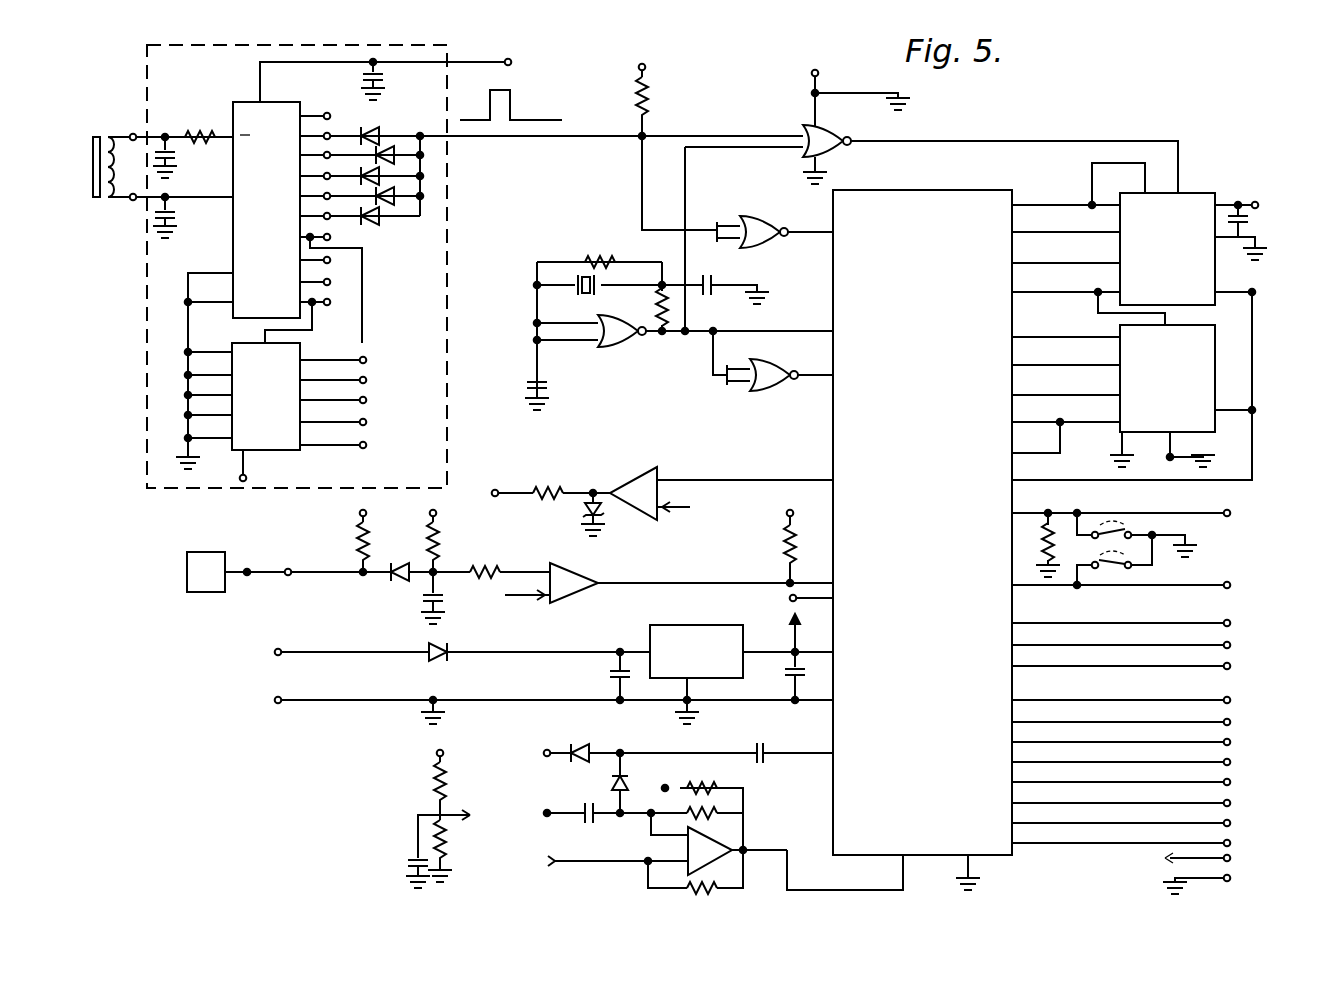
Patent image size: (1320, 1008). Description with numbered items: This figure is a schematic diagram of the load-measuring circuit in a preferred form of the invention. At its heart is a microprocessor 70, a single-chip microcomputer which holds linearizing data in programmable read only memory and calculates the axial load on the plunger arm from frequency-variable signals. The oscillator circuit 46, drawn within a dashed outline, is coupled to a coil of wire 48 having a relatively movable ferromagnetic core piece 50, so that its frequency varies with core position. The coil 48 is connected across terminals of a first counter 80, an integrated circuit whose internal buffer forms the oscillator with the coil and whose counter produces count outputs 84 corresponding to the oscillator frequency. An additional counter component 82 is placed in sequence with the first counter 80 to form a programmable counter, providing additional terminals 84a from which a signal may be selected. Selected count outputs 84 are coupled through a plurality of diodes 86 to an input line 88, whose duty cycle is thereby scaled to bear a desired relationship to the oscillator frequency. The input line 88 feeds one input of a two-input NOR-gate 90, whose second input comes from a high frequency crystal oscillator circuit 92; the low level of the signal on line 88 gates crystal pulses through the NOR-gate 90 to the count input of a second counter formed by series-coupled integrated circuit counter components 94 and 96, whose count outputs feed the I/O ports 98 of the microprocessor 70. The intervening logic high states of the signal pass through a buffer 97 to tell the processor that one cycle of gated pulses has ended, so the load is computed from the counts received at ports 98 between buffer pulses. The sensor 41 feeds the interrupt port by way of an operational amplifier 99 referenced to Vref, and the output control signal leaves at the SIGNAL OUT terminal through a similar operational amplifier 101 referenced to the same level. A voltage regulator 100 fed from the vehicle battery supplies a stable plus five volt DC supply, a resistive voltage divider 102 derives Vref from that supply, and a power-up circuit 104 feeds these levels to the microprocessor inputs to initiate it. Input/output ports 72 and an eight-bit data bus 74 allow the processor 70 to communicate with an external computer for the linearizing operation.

The sensor 41 is at (368, 561).
The oscillator circuit 46 is at (447, 252).
The coil of wire 48 is at (118, 137).
The ferromagnetic core piece 50 is at (128, 200).
The microprocessor 70 is at (826, 414).
The input/output ports 72 is at (1242, 502).
The 8-bit data bus 74 is at (1239, 694).
The first counter 80 is at (234, 100).
The additional counter component 82 is at (296, 452).
The count outputs 84 is at (350, 123).
The additional terminals 84a is at (379, 344).
The diodes 86 is at (390, 120).
The input line 88 is at (597, 135).
The two-input NOR-gate 90 is at (801, 123).
The high frequency crystal oscillator circuit 92 is at (584, 260).
The integrated circuit counter component 94 is at (1184, 192).
The integrated circuit counter component 96 is at (1216, 346).
The buffer 97 is at (758, 216).
The I/O ports 98 is at (1056, 183).
The operational amplifier 99 is at (556, 563).
The voltage regulator 100 is at (650, 626).
The operational amplifier 101 is at (626, 468).
The resistive voltage divider 102 is at (406, 809).
The power-up circuit 104 is at (661, 742).